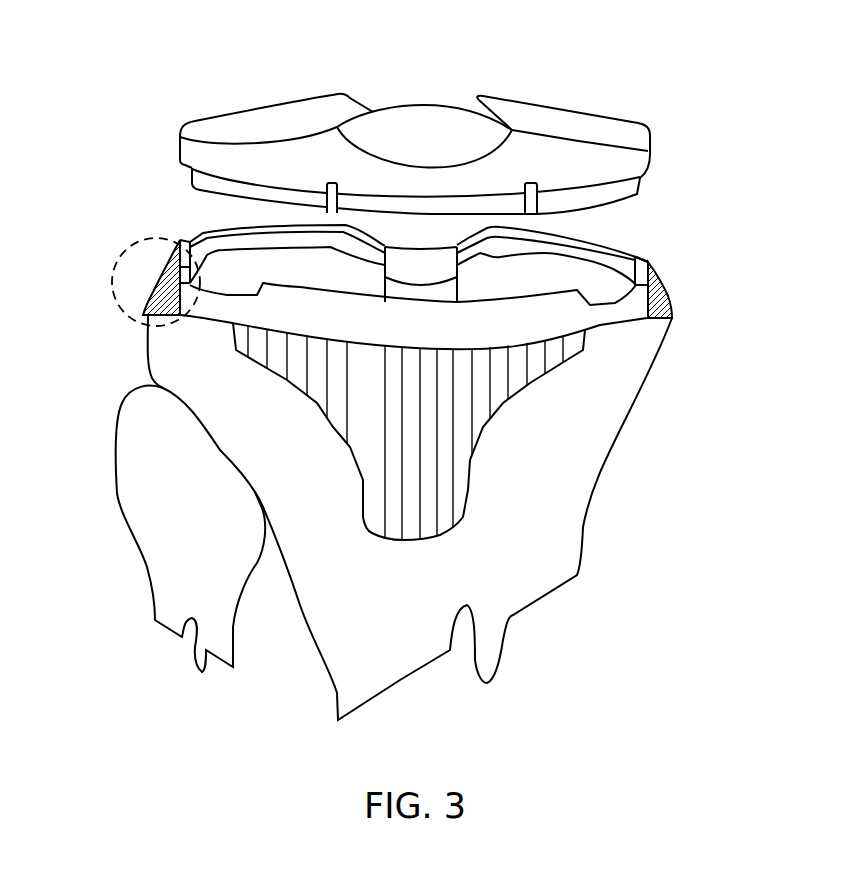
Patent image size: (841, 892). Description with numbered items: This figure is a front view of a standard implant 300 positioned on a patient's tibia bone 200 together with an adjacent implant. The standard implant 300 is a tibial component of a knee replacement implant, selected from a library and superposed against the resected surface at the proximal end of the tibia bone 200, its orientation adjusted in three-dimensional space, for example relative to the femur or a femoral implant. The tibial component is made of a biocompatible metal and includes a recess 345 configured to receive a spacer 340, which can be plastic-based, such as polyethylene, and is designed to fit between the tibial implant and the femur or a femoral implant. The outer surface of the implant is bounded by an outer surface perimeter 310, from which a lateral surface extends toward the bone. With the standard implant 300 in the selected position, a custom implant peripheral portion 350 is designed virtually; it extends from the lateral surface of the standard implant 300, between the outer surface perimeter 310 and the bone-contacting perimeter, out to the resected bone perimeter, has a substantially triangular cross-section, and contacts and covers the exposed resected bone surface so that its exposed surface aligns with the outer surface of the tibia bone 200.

The tibia bone 200 is at (584, 533).
The standard implant 300 is at (414, 369).
The outer surface perimeter 310 is at (185, 240).
The spacer 340 is at (579, 112).
The recess 345 is at (640, 258).
The custom implant peripheral portion 350 is at (167, 283).